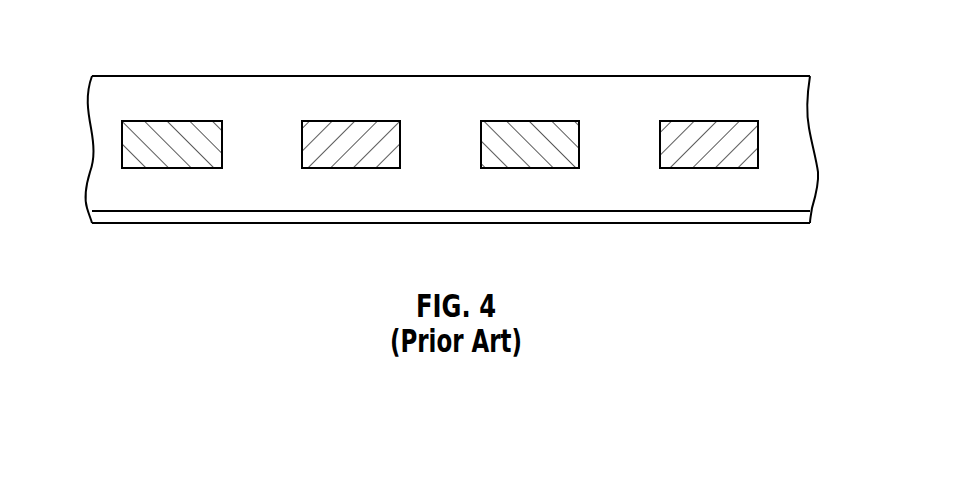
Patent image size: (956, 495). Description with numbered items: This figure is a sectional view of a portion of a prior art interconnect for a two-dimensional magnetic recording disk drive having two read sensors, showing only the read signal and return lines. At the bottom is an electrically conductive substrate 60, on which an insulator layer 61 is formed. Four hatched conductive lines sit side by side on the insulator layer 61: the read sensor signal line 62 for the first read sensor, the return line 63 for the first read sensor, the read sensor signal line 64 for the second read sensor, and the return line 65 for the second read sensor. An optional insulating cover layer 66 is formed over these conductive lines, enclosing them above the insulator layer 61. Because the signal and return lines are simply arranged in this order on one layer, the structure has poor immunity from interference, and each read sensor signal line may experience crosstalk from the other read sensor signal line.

The electrically conductive substrate 60 is at (803, 216).
The insulator layer 61 is at (93, 192).
The read sensor signal line 62 is at (172, 119).
The return line 63 is at (352, 119).
The read sensor signal line 64 is at (530, 119).
The return line 65 is at (708, 119).
The insulating cover layer 66 is at (778, 88).